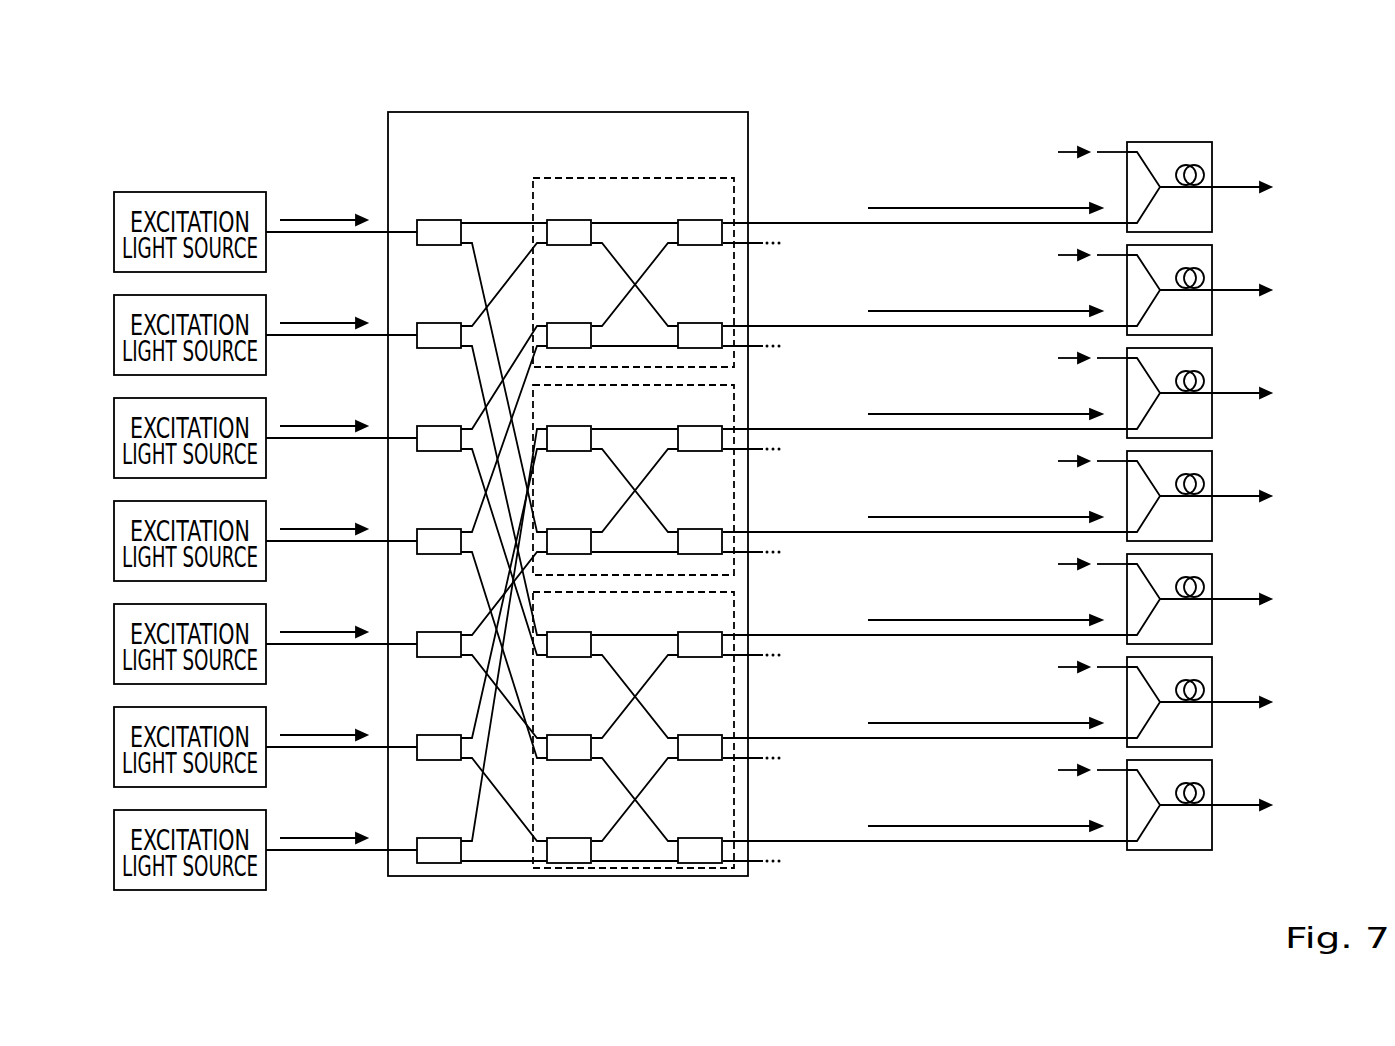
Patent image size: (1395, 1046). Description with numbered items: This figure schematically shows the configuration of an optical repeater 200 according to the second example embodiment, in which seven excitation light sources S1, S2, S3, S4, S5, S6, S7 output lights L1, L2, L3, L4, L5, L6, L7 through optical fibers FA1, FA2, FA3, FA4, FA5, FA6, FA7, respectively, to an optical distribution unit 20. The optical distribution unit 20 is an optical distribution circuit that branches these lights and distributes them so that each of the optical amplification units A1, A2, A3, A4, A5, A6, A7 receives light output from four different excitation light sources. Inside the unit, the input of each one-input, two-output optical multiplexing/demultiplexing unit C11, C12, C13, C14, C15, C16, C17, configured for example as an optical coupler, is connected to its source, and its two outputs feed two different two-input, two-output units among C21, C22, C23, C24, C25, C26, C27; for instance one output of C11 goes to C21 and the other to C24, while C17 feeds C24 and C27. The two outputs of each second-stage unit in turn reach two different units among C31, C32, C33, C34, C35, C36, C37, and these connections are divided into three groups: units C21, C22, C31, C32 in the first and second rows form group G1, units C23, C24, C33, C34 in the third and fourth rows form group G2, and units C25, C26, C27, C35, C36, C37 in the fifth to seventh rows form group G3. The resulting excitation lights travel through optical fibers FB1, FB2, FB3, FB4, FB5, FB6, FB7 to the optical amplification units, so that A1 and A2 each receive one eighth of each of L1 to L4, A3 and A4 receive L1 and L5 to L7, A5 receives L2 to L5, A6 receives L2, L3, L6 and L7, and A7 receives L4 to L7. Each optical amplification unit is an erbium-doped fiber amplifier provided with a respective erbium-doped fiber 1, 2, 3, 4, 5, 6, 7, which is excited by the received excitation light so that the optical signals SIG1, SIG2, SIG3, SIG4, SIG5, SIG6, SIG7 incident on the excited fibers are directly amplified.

The optical repeater 200 is at (188, 121).
The optical distribution unit 20 is at (387, 137).
The erbium-doped fiber 1 is at (1223, 158).
The erbium-doped fiber 2 is at (1223, 261).
The erbium-doped fiber 3 is at (1223, 364).
The erbium-doped fiber 4 is at (1223, 467).
The erbium-doped fiber 5 is at (1223, 570).
The erbium-doped fiber 6 is at (1223, 673).
The erbium-doped fiber 7 is at (1223, 776).
The optical amplification unit A1 is at (1209, 189).
The optical amplification unit A2 is at (1209, 292).
The optical amplification unit A3 is at (1209, 395).
The optical amplification unit A4 is at (1209, 498).
The optical amplification unit A5 is at (1209, 601).
The optical amplification unit A6 is at (1209, 704).
The optical amplification unit A7 is at (1209, 807).
The excitation light source S1 is at (158, 232).
The excitation light source S2 is at (158, 335).
The excitation light source S3 is at (158, 438).
The excitation light source S4 is at (158, 541).
The excitation light source S5 is at (158, 644).
The excitation light source S6 is at (158, 747).
The excitation light source S7 is at (158, 850).
The light L1 is at (323, 206).
The light L2 is at (323, 309).
The light L3 is at (323, 412).
The light L4 is at (323, 515).
The light L5 is at (323, 618).
The light L6 is at (323, 721).
The light L7 is at (323, 824).
The optical fiber FA1 is at (341, 251).
The optical fiber FA2 is at (341, 354).
The optical fiber FA3 is at (341, 457).
The optical fiber FA4 is at (341, 560).
The optical fiber FA5 is at (341, 663).
The optical fiber FA6 is at (341, 766).
The optical fiber FA7 is at (341, 869).
The optical fiber FB1 is at (925, 179).
The optical fiber FB2 is at (925, 282).
The optical fiber FB3 is at (925, 385).
The optical fiber FB4 is at (925, 488).
The optical fiber FB5 is at (925, 591).
The optical fiber FB6 is at (925, 694).
The optical fiber FB7 is at (925, 797).
The optical signal SIG1 is at (1165, 169).
The optical signal SIG2 is at (1165, 272).
The optical signal SIG3 is at (1165, 375).
The optical signal SIG4 is at (1165, 478).
The optical signal SIG5 is at (1165, 581).
The optical signal SIG6 is at (1165, 684).
The optical signal SIG7 is at (1165, 787).
The group G1 is at (736, 197).
The group G2 is at (736, 400).
The group G3 is at (736, 608).
The optical multiplexing/demultiplexing unit C11 is at (439, 215).
The optical multiplexing/demultiplexing unit C12 is at (439, 318).
The optical multiplexing/demultiplexing unit C13 is at (439, 421).
The optical multiplexing/demultiplexing unit C14 is at (439, 524).
The optical multiplexing/demultiplexing unit C15 is at (439, 627).
The optical multiplexing/demultiplexing unit C16 is at (439, 730).
The optical multiplexing/demultiplexing unit C17 is at (439, 833).
The optical multiplexing/demultiplexing unit C21 is at (569, 215).
The optical multiplexing/demultiplexing unit C22 is at (569, 318).
The optical multiplexing/demultiplexing unit C23 is at (569, 421).
The optical multiplexing/demultiplexing unit C24 is at (569, 524).
The optical multiplexing/demultiplexing unit C25 is at (569, 627).
The optical multiplexing/demultiplexing unit C26 is at (569, 730).
The optical multiplexing/demultiplexing unit C27 is at (569, 833).
The optical multiplexing/demultiplexing unit C31 is at (700, 215).
The optical multiplexing/demultiplexing unit C32 is at (700, 318).
The optical multiplexing/demultiplexing unit C33 is at (700, 421).
The optical multiplexing/demultiplexing unit C34 is at (700, 524).
The optical multiplexing/demultiplexing unit C35 is at (700, 627).
The optical multiplexing/demultiplexing unit C36 is at (700, 730).
The optical multiplexing/demultiplexing unit C37 is at (700, 833).